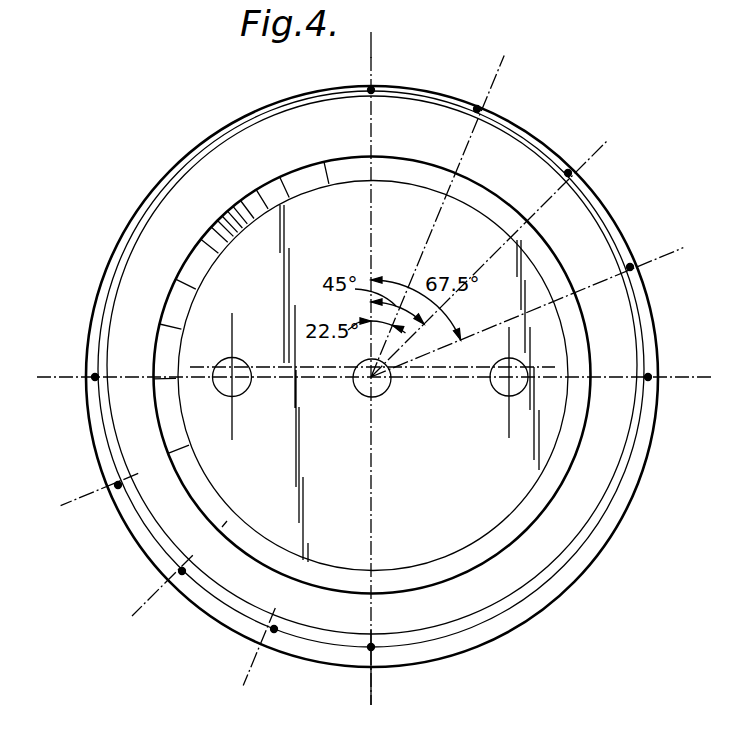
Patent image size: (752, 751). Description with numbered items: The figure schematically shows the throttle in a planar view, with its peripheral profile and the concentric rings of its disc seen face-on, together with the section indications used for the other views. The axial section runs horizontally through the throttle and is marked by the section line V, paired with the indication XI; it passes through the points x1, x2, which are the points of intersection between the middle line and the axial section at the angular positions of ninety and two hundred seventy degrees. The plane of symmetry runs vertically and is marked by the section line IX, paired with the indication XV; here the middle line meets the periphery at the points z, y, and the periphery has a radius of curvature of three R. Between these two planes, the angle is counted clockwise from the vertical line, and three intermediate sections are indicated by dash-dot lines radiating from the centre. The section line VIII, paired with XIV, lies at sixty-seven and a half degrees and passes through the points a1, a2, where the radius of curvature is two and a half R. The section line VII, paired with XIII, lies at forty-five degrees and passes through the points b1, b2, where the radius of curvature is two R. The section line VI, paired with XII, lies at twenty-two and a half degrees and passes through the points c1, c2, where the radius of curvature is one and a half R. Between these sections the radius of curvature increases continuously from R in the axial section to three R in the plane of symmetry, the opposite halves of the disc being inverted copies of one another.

The point of intersection in the symmetry plane z is at (370, 88).
The point of intersection in the symmetry plane y is at (370, 648).
The point of intersection x1 is at (649, 376).
The point of intersection x2 is at (94, 376).
The point of intersection a1 is at (477, 109).
The point of intersection a2 is at (273, 630).
The point of intersection b1 is at (569, 172).
The point of intersection b2 is at (181, 572).
The point of intersection c1 is at (631, 266).
The point of intersection c2 is at (117, 485).
The section line XV is at (373, 703).
The section line IX is at (456, 374).
The section line VIII is at (247, 677).
The section line XIV is at (450, 399).
The section line XIII is at (139, 609).
The section line VII is at (425, 414).
The section line XII is at (71, 501).
The section line VI is at (407, 419).
The section line XI is at (707, 379).
The section line V is at (376, 427).